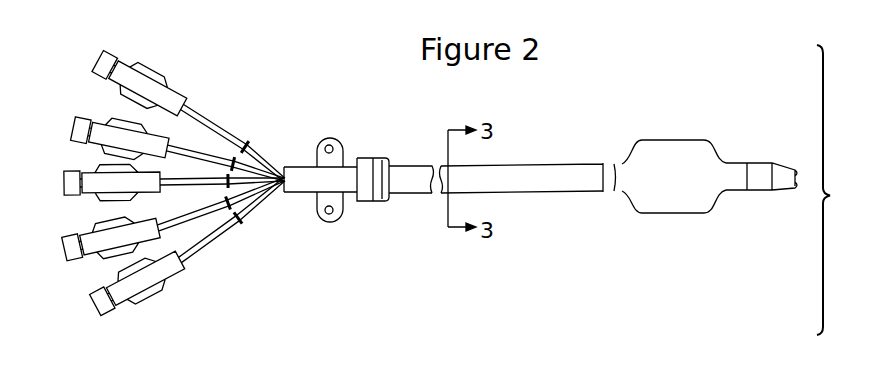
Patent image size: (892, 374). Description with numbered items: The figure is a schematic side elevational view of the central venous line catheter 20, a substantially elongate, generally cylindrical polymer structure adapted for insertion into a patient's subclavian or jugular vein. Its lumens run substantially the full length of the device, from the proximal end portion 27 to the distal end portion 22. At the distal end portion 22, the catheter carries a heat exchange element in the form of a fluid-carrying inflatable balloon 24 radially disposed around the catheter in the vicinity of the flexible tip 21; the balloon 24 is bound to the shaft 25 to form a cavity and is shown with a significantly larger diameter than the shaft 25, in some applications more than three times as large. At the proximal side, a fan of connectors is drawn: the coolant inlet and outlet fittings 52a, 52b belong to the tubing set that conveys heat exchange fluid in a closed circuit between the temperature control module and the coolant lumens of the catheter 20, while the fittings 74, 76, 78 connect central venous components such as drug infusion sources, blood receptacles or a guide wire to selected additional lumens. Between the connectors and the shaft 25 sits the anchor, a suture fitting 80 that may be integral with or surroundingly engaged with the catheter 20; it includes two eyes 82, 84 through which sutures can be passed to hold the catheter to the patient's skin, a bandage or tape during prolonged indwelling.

The central venous line catheter 20 is at (528, 174).
The flexible tip 21 is at (758, 162).
The distal end portion 22 is at (582, 193).
The inflatable balloon 24 is at (672, 213).
The shaft 25 is at (518, 194).
The proximal end portion 27 is at (410, 194).
The coolant inlet fitting 52a is at (213, 147).
The coolant outlet fitting 52b is at (228, 160).
The fitting 74 is at (92, 181).
The fitting 76 is at (95, 252).
The fitting 78 is at (123, 295).
The suture fitting 80 is at (336, 181).
The eye 82 is at (325, 143).
The eye 84 is at (327, 217).